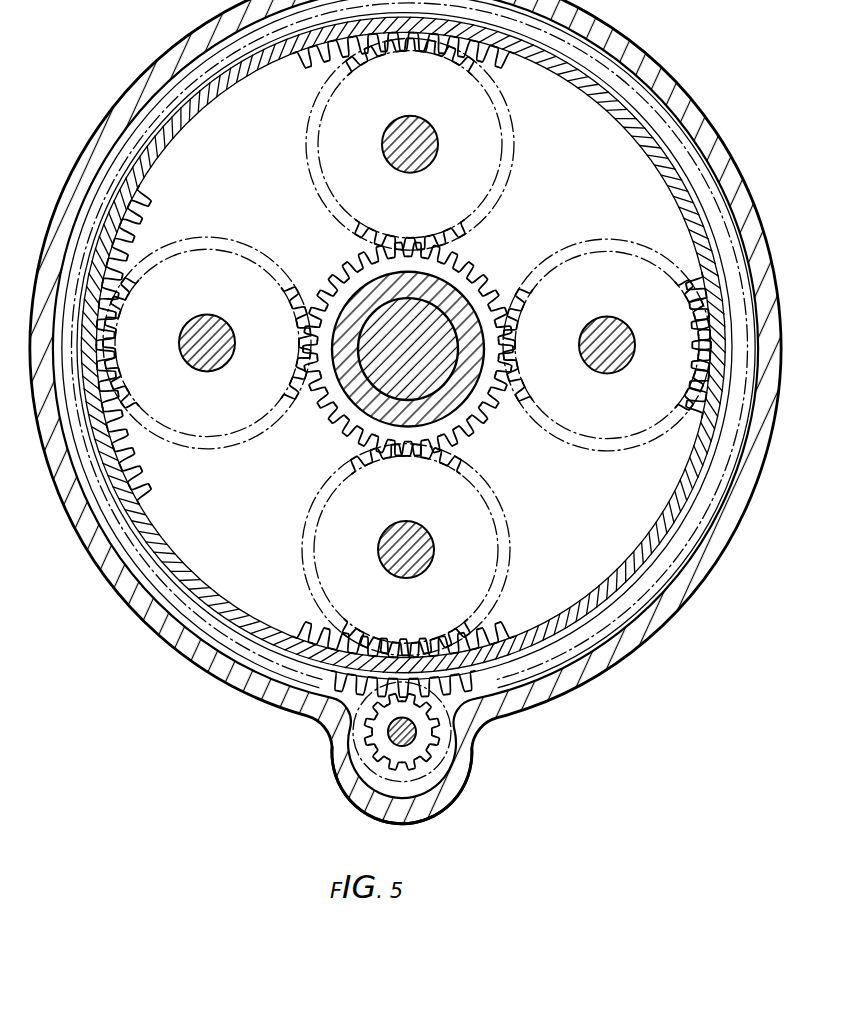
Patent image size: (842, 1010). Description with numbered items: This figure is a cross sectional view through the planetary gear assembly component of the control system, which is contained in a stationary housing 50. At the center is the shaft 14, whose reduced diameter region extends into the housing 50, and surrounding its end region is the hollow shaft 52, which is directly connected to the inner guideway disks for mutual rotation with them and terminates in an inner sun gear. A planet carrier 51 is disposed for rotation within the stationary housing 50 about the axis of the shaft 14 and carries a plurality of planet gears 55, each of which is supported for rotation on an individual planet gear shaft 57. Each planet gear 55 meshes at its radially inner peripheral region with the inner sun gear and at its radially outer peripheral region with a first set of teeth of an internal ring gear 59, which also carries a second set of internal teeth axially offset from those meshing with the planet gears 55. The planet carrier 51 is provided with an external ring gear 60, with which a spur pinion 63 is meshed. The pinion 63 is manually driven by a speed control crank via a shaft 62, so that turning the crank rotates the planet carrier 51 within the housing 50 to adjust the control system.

The shaft 14 is at (437, 355).
The stationary housing 50 is at (557, 690).
The planet carrier 51 is at (578, 193).
The hollow shaft 52 is at (470, 400).
The planet gears 55 is at (333, 160).
The planet gear shaft 57 is at (398, 162).
The internal ring gear 59 is at (142, 488).
The external ring gear 60 is at (318, 708).
The shaft 62 is at (416, 733).
The spur pinion 63 is at (425, 752).